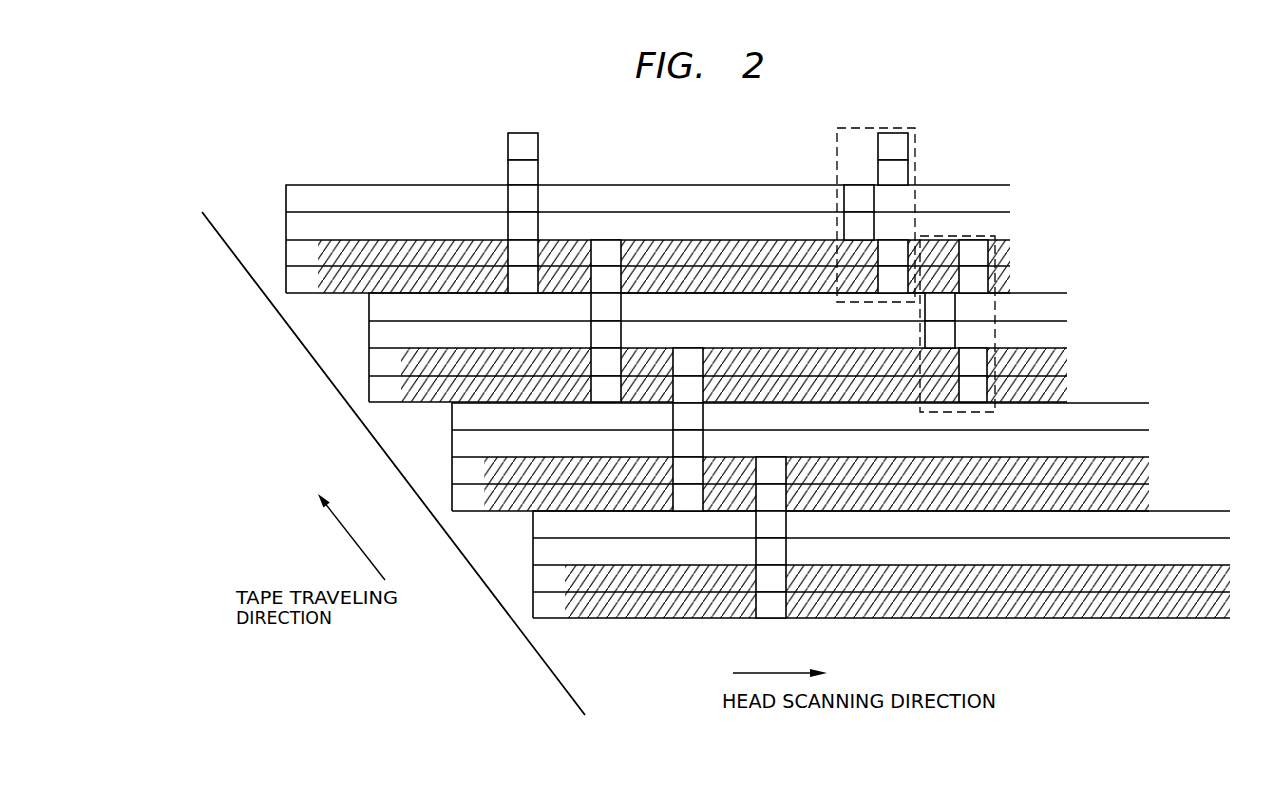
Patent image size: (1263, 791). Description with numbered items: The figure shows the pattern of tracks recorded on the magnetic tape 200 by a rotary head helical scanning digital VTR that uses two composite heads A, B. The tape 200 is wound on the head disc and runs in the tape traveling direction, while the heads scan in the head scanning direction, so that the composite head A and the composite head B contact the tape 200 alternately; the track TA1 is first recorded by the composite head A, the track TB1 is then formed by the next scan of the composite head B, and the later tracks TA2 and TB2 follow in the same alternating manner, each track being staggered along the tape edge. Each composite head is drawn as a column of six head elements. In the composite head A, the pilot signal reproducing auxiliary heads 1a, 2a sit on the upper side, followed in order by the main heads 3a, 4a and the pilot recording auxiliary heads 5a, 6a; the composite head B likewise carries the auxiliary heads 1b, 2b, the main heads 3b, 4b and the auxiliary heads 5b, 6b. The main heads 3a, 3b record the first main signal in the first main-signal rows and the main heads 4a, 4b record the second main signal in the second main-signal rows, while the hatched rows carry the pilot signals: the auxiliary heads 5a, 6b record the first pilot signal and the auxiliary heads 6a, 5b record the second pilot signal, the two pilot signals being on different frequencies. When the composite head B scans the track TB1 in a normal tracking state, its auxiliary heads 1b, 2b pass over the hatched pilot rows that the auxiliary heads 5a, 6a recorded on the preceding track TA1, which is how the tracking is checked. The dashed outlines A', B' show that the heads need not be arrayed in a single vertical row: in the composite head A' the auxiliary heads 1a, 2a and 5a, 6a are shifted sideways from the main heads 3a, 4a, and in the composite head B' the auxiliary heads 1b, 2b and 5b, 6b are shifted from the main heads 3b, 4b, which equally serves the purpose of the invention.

The magnetic tape 200 is at (552, 674).
The composite head A is at (708, 311).
The composite head B is at (789, 417).
The composite head A' is at (902, 205).
The composite head B' is at (977, 313).
The track TA1 is at (286, 288).
The track TB1 is at (369, 387).
The track TA2 is at (452, 509).
The track TB2 is at (533, 612).
The auxiliary head 1a is at (708, 254).
The auxiliary head 2a is at (708, 281).
The main head 3a is at (691, 307).
The main head 4a is at (691, 334).
The auxiliary head 5a is at (708, 362).
The auxiliary head 6a is at (722, 335).
The auxiliary head 1b is at (789, 362).
The auxiliary head 2b is at (789, 388).
The main head 3b is at (773, 415).
The main head 4b is at (773, 443).
The auxiliary head 5b is at (789, 470).
The auxiliary head 6b is at (803, 444).